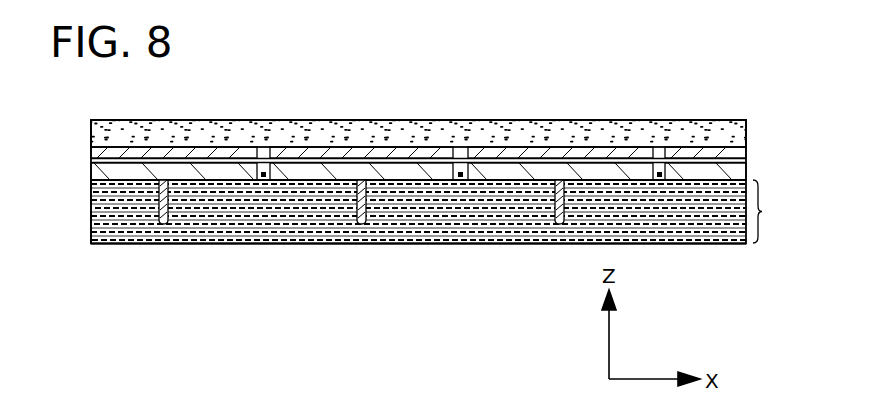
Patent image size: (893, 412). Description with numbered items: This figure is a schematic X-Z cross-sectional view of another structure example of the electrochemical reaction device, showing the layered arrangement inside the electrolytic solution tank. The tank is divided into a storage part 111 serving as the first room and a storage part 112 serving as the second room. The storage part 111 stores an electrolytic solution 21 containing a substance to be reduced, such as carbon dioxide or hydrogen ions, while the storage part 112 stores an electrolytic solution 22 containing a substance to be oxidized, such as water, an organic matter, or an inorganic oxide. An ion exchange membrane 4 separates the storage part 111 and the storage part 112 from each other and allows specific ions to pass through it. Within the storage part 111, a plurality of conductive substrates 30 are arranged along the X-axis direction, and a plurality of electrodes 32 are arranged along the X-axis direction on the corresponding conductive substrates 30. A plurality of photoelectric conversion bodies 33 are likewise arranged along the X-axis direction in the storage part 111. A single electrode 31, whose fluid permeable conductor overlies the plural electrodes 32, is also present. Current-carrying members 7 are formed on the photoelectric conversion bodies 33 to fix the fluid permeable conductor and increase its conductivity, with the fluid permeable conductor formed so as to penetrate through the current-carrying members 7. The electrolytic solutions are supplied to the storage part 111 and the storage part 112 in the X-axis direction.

The storage part 112 is at (91, 128).
The electrolytic solution 22 is at (247, 130).
The current-carrying member 7 is at (563, 183).
The ion exchange membrane 4 is at (658, 163).
The electrode 32 is at (746, 146).
The photoelectric conversion body 33 is at (746, 159).
The conductive substrate 30 is at (746, 171).
The electrode 31 is at (444, 211).
The storage part 111 is at (91, 200).
The electrolytic solution 21 is at (280, 244).